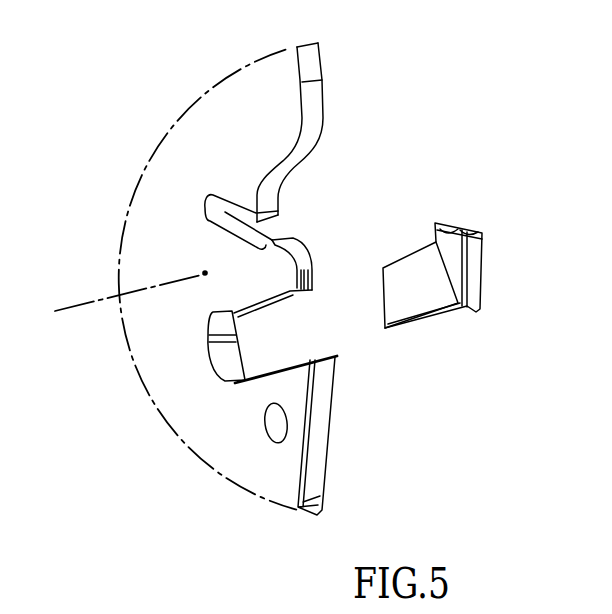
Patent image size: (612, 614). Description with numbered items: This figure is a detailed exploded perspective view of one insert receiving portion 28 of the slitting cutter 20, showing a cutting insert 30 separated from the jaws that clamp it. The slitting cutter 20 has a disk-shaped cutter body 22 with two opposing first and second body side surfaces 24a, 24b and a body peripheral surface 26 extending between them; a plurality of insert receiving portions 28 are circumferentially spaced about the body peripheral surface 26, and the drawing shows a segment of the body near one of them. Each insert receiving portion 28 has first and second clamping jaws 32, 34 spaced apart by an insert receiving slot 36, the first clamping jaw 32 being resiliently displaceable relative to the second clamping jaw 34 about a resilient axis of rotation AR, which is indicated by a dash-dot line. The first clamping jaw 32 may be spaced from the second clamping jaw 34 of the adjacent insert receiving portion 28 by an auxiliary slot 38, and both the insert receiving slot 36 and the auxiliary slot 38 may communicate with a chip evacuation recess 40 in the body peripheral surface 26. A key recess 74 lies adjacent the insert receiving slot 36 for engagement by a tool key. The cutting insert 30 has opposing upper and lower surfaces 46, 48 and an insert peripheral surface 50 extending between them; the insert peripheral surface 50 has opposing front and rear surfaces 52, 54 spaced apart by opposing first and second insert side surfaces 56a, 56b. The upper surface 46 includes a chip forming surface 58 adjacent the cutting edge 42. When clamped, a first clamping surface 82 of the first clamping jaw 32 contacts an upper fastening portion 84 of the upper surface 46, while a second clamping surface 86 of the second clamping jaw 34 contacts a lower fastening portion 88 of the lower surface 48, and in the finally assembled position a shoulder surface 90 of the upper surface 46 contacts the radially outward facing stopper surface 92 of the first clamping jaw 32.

The slitting cutter 20 is at (413, 117).
The cutter body 22 is at (170, 382).
The first body side surface 24a is at (255, 117).
The second body side surface 24b is at (323, 107).
The body peripheral surface 26 is at (307, 62).
The insert receiving portion 28 is at (253, 397).
The cutting insert 30 is at (489, 321).
The first clamping jaw 32 is at (253, 283).
The second clamping jaw 34 is at (292, 398).
The insert receiving slot 36 is at (241, 345).
The auxiliary slot 38 is at (260, 230).
The chip evacuation recess 40 is at (288, 190).
The cutting edge 42 is at (484, 248).
The upper surface 46 is at (418, 239).
The lower surface 48 is at (428, 329).
The insert peripheral surface 50 is at (393, 303).
The front surface 52 is at (474, 264).
The rear surface 54 is at (381, 303).
The first insert side surface 56a is at (412, 312).
The second insert side surface 56b is at (483, 298).
The chip forming surface 58 is at (463, 224).
The key recess 74 is at (277, 431).
The first clamping surface 82 is at (272, 305).
The upper fastening portion 84 is at (420, 250).
The second clamping surface 86 is at (283, 366).
The lower fastening portion 88 is at (453, 319).
The shoulder surface 90 is at (437, 228).
The stopper surface 92 is at (312, 272).
The resilient axis of rotation AR is at (111, 300).